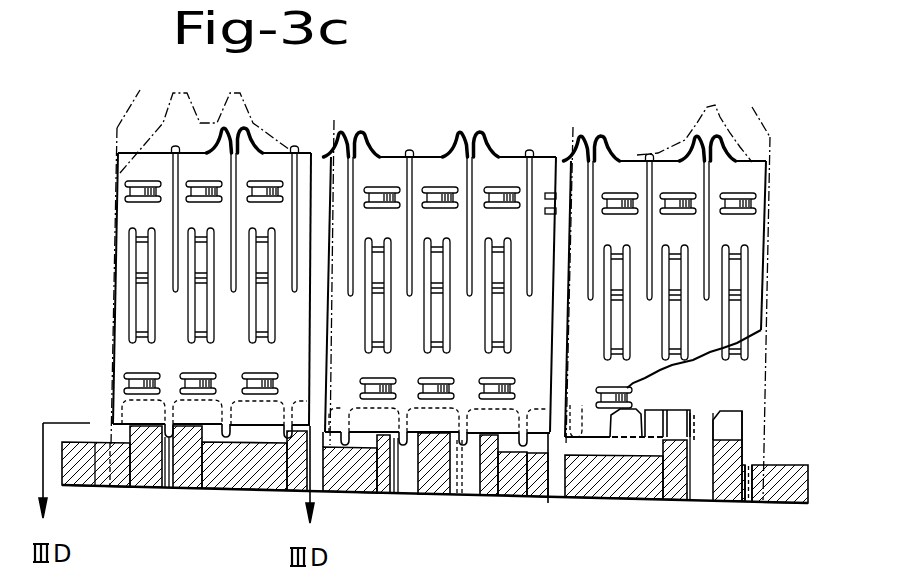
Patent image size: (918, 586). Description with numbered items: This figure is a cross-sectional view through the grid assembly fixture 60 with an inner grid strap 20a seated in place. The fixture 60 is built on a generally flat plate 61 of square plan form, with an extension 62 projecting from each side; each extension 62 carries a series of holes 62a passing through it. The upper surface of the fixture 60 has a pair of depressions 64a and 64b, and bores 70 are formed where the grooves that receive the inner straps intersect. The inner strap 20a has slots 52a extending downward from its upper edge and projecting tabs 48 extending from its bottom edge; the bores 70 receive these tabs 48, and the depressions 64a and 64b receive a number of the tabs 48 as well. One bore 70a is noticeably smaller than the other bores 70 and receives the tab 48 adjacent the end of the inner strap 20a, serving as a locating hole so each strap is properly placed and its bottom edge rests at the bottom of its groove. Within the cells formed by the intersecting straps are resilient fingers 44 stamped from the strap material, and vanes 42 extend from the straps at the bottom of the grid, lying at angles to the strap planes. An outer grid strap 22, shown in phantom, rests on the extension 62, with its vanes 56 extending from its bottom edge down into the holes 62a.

The inner grid strap 20a is at (128, 213).
The outer grid strap 22 is at (770, 397).
The vane 42 is at (249, 140).
The resilient finger 44 is at (143, 300).
The projecting tab 48 is at (289, 445).
The slot 52a is at (470, 178).
The vane 56 is at (775, 477).
The grid assembly fixture 60 is at (370, 498).
The plate 61 is at (130, 487).
The extension 62 is at (808, 507).
The hole 62a is at (752, 500).
The depression 64a is at (620, 449).
The depression 64b is at (244, 440).
The bore 70 is at (478, 488).
The bore 70a is at (168, 487).